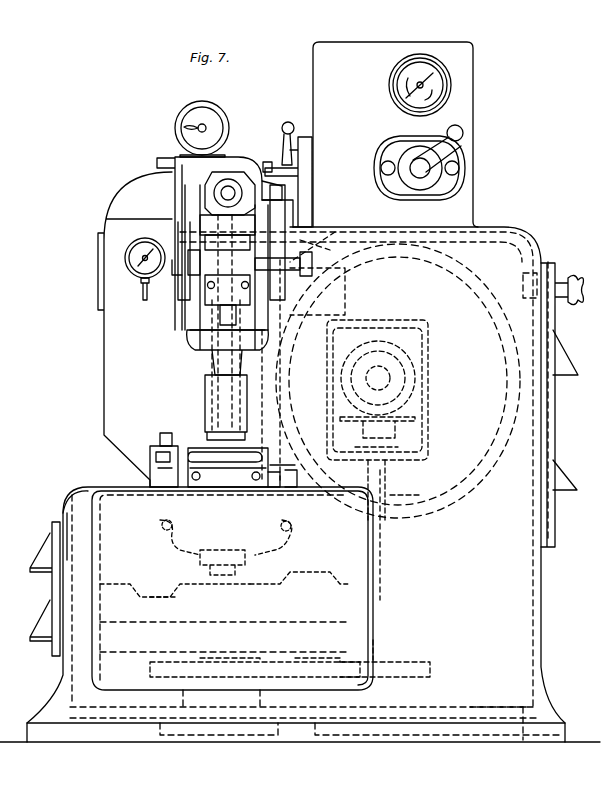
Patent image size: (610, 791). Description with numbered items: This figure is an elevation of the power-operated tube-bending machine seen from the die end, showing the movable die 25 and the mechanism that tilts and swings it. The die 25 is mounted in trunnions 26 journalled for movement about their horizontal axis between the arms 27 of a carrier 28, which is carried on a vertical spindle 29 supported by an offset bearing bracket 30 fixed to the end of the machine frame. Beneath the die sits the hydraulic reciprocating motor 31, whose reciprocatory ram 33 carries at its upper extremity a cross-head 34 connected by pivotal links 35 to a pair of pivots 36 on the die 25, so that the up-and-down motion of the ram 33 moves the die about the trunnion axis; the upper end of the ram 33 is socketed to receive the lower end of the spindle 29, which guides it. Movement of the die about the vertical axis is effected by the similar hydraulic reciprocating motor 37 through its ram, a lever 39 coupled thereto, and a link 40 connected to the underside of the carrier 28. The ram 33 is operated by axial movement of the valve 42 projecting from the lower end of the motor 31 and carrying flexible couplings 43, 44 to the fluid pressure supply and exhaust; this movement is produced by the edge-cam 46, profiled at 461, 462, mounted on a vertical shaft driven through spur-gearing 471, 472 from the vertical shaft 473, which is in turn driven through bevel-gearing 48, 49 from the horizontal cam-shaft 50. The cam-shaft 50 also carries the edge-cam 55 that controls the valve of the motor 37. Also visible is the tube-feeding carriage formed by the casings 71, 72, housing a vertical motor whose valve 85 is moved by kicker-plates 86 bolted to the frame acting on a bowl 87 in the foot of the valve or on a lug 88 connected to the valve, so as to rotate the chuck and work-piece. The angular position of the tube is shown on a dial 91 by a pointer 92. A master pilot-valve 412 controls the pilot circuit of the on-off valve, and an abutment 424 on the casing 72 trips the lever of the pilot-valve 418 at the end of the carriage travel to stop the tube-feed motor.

The movable die 25 is at (229, 190).
The trunnions 26 is at (270, 198).
The arms 27 is at (270, 208).
The carrier 28 is at (215, 292).
The vertical spindle 29 is at (196, 336).
The offset bearing bracket 30 is at (226, 322).
The hydraulic reciprocating motor 31 is at (238, 480).
The reciprocatory ram 33 is at (210, 428).
The cross-head 34 is at (205, 356).
The pivotal links 35 is at (276, 217).
The pivots 36 is at (194, 184).
The hydraulic reciprocating motor 37 is at (340, 266).
The lever 39 is at (314, 274).
The link 40 is at (270, 288).
The valve 42 is at (248, 556).
The flexible coupling 43 is at (292, 520).
The flexible coupling 44 is at (162, 522).
The edge-cam 46 is at (130, 578).
The bevel-gear 48 is at (395, 418).
The bevel-gear 49 is at (405, 372).
The horizontal cam-shaft 50 is at (382, 378).
The edge-cam 55 is at (466, 485).
The casing 71 is at (104, 332).
The casing 72 is at (188, 165).
The valve 85 is at (163, 432).
The kicker-plates 86 is at (150, 458).
The bowl 87 is at (152, 442).
The lug 88 is at (205, 280).
The dial 91 is at (199, 108).
The pointer 92 is at (190, 127).
The master pilot-valve 412 is at (428, 200).
The pilot-valve 418 is at (283, 136).
The abutment 424 is at (268, 186).
The cam profile 461 is at (300, 578).
The cam profile 462 is at (160, 596).
The spur-gear 471 is at (150, 665).
The spur-gear 472 is at (430, 662).
The vertical shaft 473 is at (382, 566).